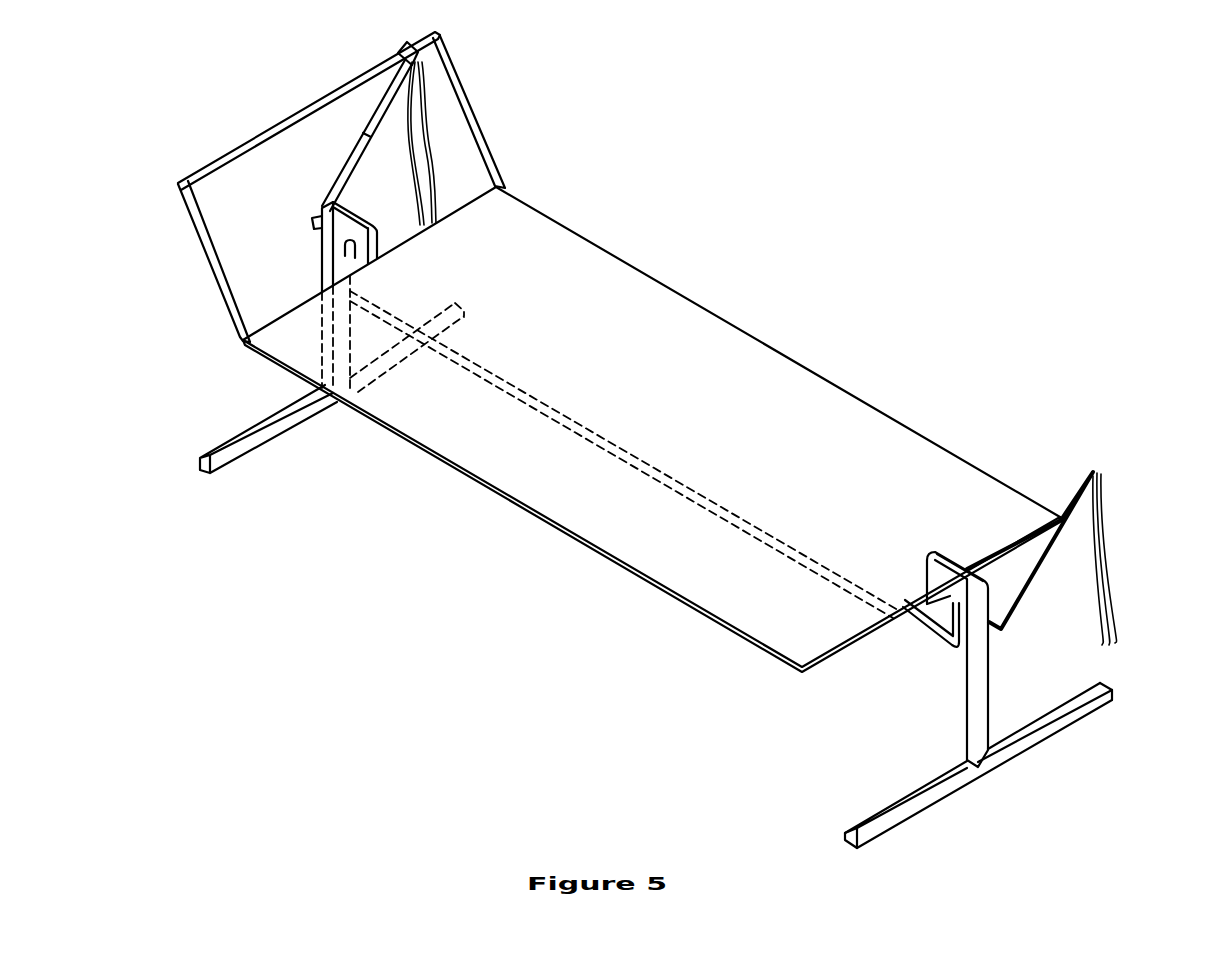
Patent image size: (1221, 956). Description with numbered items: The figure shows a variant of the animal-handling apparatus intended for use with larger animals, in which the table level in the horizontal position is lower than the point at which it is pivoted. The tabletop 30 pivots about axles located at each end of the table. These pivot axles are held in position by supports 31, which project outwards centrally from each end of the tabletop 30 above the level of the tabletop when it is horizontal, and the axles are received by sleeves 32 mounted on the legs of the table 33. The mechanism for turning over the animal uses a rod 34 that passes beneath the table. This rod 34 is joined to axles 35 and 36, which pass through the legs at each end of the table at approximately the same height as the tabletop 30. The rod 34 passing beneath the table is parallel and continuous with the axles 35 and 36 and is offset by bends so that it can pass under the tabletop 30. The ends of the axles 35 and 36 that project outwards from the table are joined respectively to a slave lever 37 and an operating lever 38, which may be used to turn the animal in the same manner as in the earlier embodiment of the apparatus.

The tabletop 30 is at (628, 268).
The supports 31 is at (927, 577).
The sleeves 32 is at (952, 567).
The legs of the table 33 is at (985, 715).
The rod 34 is at (600, 443).
The axle 35 is at (313, 228).
The axle 36 is at (957, 612).
The slave lever 37 is at (340, 167).
The operating lever 38 is at (1052, 545).